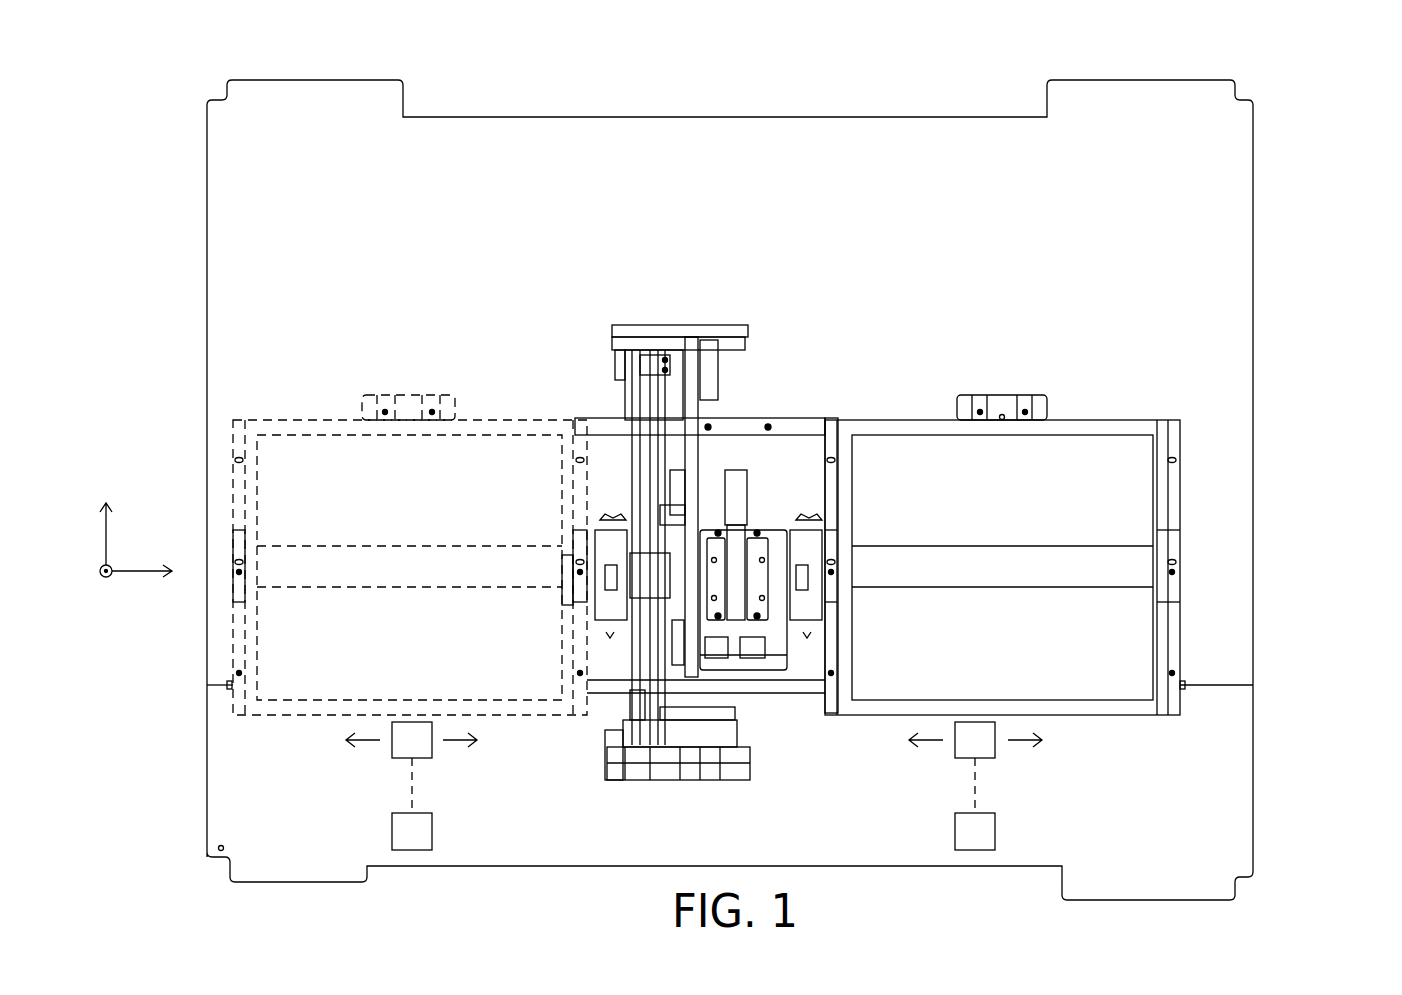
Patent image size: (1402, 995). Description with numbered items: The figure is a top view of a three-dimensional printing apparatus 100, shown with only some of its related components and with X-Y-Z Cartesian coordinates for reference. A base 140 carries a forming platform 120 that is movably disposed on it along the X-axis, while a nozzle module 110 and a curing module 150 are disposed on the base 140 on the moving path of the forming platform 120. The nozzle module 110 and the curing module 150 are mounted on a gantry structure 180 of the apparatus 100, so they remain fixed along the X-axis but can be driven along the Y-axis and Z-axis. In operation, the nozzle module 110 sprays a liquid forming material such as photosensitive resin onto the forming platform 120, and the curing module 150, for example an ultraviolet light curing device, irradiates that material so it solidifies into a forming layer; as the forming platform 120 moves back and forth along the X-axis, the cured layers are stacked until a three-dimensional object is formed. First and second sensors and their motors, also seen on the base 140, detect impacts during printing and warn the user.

The 3D printing apparatus 100 is at (732, 492).
The nozzle module 110 is at (732, 525).
The forming platform 120 is at (1100, 450).
The base 140 is at (1237, 160).
The curing module 150 is at (607, 592).
The gantry structure 180 is at (680, 325).